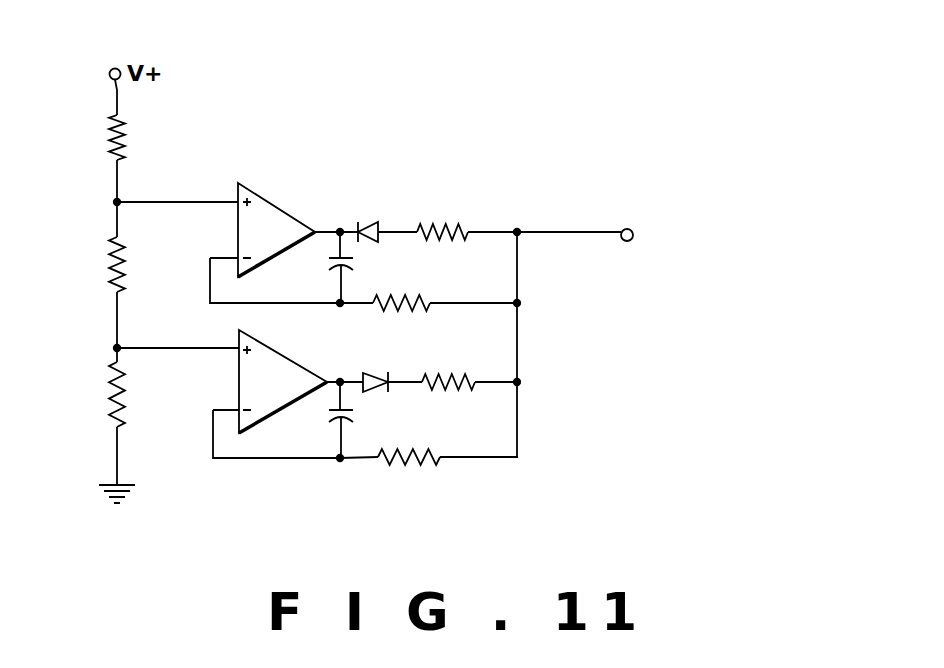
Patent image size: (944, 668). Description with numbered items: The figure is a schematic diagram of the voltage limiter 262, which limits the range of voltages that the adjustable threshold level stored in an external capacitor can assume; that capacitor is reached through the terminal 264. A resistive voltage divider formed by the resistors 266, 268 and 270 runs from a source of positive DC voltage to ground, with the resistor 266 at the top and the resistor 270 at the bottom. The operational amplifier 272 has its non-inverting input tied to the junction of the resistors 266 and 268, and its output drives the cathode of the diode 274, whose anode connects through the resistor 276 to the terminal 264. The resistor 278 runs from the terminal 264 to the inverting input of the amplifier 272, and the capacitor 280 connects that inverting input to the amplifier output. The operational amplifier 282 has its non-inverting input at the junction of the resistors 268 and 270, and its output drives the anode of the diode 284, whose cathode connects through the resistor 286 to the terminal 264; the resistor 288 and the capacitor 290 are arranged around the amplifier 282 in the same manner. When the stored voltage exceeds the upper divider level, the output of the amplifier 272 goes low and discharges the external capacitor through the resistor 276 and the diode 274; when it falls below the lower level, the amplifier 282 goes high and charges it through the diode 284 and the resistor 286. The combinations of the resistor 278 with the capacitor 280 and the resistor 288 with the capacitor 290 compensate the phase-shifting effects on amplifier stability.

The voltage limiter 262 is at (432, 167).
The terminal 264 is at (577, 232).
The resistor 266 is at (124, 148).
The resistor 268 is at (112, 264).
The resistor 270 is at (111, 388).
The operational amplifier 272 is at (318, 178).
The diode 274 is at (360, 222).
The resistor 276 is at (450, 230).
The resistor 278 is at (408, 300).
The capacitor 280 is at (336, 258).
The operational amplifier 282 is at (278, 350).
The diode 284 is at (366, 372).
The resistor 286 is at (441, 390).
The resistor 288 is at (416, 463).
The capacitor 290 is at (336, 410).